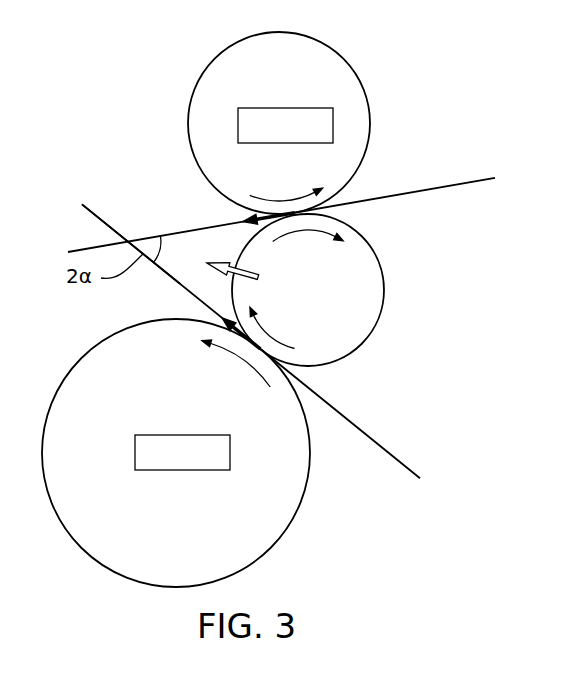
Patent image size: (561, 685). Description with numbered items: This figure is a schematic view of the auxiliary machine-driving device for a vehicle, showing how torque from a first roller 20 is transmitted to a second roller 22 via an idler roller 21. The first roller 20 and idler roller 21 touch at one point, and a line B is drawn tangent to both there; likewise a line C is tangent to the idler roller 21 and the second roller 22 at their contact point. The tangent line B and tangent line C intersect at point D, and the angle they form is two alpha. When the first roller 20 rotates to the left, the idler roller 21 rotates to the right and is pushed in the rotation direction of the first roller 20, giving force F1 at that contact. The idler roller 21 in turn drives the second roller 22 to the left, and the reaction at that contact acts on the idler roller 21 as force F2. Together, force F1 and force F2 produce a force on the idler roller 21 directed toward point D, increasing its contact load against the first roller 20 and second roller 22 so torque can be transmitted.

The first roller 20 is at (72, 363).
The idler roller 21 is at (370, 285).
The second roller 22 is at (368, 98).
The tangent line B is at (400, 458).
The tangent line C is at (462, 184).
The intersection point D is at (133, 243).
The force F1 is at (222, 317).
The force F2 is at (244, 222).